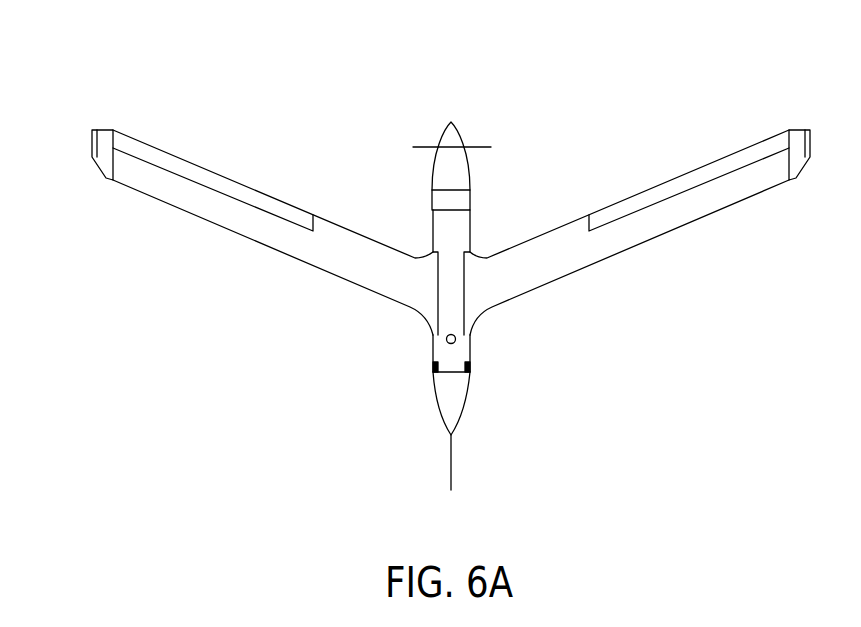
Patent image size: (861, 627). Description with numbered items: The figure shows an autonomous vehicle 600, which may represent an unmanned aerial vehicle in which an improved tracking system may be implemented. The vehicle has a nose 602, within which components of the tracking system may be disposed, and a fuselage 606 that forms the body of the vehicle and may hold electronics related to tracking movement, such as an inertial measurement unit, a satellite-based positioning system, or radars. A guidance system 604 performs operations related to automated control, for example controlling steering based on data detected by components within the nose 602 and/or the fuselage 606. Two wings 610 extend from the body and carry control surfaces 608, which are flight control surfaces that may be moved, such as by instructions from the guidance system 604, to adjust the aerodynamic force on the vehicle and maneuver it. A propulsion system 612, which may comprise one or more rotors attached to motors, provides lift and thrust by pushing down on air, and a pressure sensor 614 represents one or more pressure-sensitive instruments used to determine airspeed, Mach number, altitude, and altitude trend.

The autonomous vehicle 600 is at (148, 82).
The nose 602 is at (434, 398).
The guidance system 604 is at (433, 348).
The fuselage 606 is at (450, 317).
The control surfaces 608 is at (222, 190).
The wings 610 is at (352, 228).
The propulsion system 612 is at (448, 121).
The pressure sensor 614 is at (452, 460).